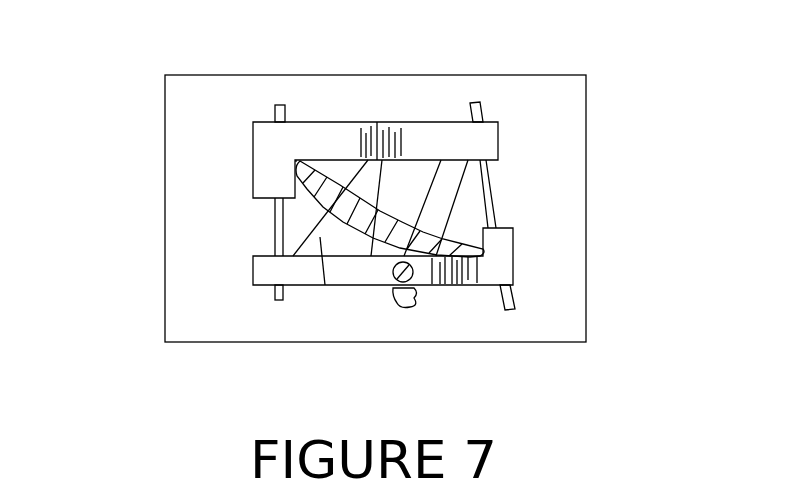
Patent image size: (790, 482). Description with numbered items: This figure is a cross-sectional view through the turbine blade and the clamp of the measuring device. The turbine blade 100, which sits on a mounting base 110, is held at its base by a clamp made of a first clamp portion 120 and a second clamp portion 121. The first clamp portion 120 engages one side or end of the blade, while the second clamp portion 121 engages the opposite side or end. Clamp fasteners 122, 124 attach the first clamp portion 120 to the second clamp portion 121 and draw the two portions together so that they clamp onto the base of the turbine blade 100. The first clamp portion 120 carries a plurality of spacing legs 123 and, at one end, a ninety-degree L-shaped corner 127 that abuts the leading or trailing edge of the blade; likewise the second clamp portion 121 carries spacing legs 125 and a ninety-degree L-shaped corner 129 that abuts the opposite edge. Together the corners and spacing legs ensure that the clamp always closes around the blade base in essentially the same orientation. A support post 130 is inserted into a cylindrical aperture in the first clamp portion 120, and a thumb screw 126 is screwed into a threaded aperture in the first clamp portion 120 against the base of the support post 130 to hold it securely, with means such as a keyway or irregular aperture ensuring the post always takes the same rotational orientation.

The turbine blade 100 is at (321, 187).
The mounting base 110 is at (173, 122).
The first clamp portion 120 is at (308, 280).
The second clamp portion 121 is at (358, 122).
The clamp fastener 122 is at (275, 298).
The spacing legs 123 is at (375, 258).
The clamp fastener 124 is at (510, 310).
The spacing legs 125 is at (372, 170).
The thumb screw 126 is at (410, 300).
The L-shaped corner 127 is at (487, 257).
The L-shaped corner 129 is at (296, 160).
The support post 130 is at (398, 279).